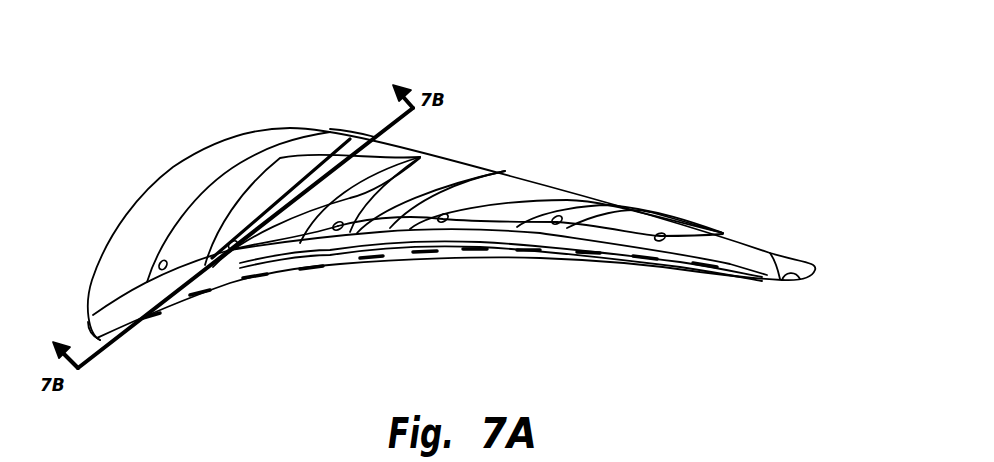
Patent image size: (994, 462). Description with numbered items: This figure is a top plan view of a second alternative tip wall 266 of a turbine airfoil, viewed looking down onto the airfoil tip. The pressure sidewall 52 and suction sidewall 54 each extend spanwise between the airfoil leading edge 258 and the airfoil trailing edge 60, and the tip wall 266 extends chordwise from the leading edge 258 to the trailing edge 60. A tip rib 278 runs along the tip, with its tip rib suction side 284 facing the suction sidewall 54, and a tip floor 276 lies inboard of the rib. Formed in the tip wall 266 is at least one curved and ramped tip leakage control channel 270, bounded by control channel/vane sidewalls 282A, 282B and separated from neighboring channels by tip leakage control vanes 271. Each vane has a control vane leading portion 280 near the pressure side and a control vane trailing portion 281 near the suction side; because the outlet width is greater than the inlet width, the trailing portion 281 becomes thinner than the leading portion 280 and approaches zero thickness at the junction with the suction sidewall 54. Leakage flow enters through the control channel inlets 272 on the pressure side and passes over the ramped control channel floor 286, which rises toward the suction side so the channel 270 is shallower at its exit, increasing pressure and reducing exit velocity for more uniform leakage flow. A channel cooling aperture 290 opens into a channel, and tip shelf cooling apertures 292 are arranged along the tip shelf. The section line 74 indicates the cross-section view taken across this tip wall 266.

The tip wall 266 is at (797, 174).
The suction sidewall 54 is at (350, 108).
The ramped tip leakage control channel 270 is at (228, 164).
The ramped control channel floor 286 is at (203, 195).
The tip floor 276 is at (142, 218).
The tip rib suction side 284 is at (127, 290).
The leading edge 258 is at (93, 337).
The pressure sidewall 52 is at (489, 291).
The tip rib 278 is at (324, 243).
The tip shelf cooling apertures 292 is at (300, 290).
The control vane leading portions 280 is at (614, 228).
The control channel inlets 272 is at (358, 222).
The rib 74 is at (515, 193).
The control channel/vane sidewall 282A is at (310, 220).
The control channel/vane sidewall 282B is at (294, 156).
The tip leakage control vanes 271 is at (250, 200).
The control vane trailing portions 281 is at (683, 227).
The channel cooling aperture 290 is at (660, 234).
The airfoil trailing edge 60 is at (812, 275).